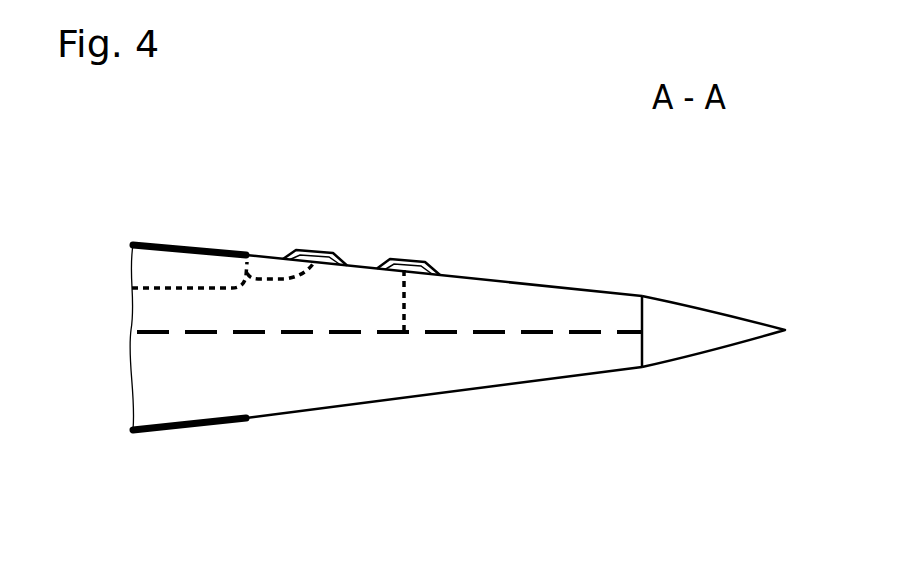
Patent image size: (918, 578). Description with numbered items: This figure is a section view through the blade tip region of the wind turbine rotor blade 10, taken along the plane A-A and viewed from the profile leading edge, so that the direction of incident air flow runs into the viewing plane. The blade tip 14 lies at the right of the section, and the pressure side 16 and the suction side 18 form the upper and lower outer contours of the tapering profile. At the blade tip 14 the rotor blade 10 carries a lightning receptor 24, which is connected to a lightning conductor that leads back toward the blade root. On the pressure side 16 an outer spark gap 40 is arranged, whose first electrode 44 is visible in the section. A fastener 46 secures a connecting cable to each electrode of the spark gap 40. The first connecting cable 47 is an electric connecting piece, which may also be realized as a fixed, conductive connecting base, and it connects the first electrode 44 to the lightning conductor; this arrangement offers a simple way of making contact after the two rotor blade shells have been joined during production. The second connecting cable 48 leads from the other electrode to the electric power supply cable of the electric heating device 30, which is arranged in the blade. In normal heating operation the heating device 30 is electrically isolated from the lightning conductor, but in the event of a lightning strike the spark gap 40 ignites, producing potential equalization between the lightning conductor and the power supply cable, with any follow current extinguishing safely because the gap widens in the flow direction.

The wind turbine rotor blade 10 is at (633, 440).
The blade tip 14 is at (716, 303).
The pressure side 16 is at (527, 277).
The suction side 18 is at (452, 397).
The lightning receptor 24 is at (687, 341).
The electric heating device 30 is at (170, 245).
The outer spark gap 40 is at (322, 297).
The first electrode 44 is at (428, 261).
The fastener 46 is at (298, 254).
The first connecting cable 47 is at (404, 290).
The second connecting cable 48 is at (283, 278).